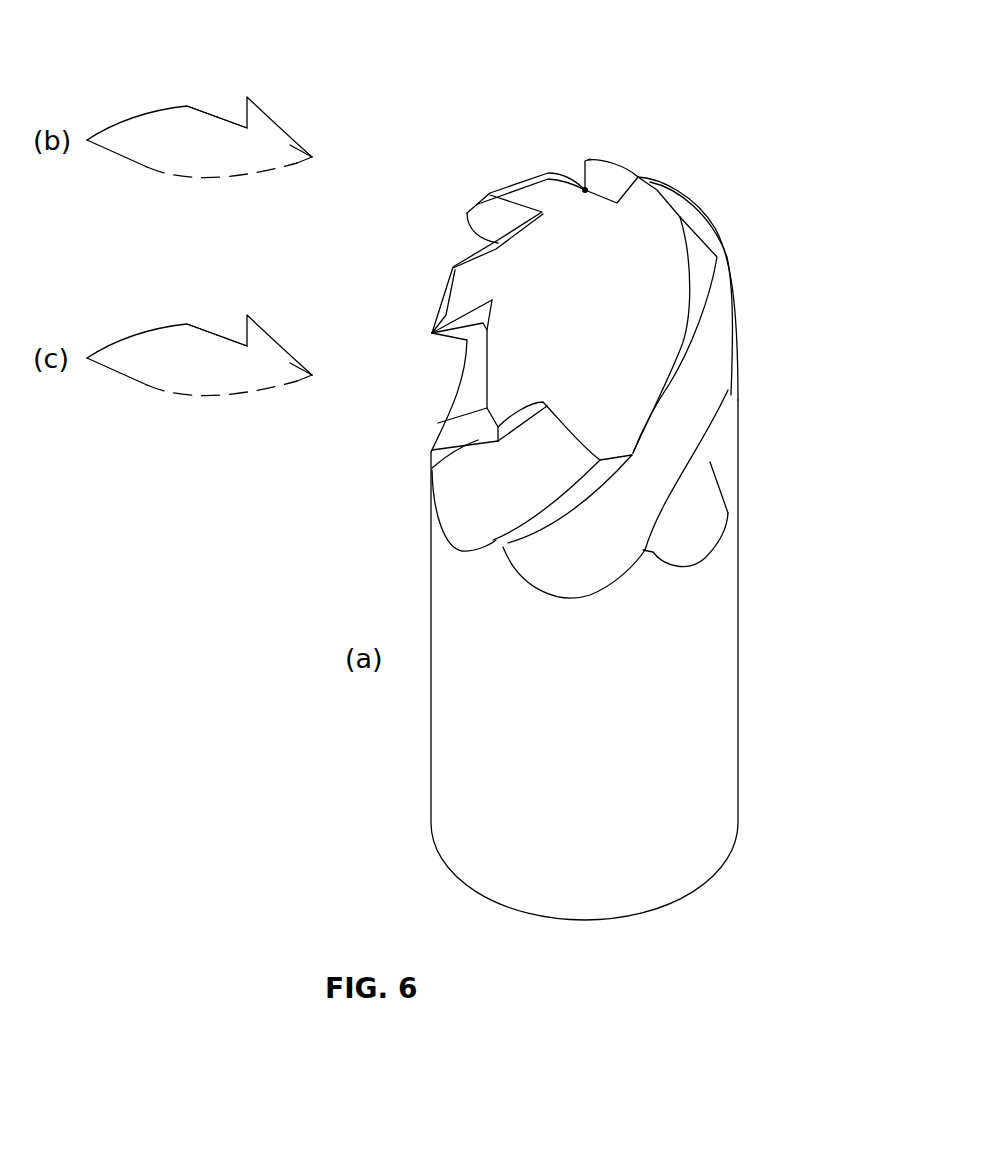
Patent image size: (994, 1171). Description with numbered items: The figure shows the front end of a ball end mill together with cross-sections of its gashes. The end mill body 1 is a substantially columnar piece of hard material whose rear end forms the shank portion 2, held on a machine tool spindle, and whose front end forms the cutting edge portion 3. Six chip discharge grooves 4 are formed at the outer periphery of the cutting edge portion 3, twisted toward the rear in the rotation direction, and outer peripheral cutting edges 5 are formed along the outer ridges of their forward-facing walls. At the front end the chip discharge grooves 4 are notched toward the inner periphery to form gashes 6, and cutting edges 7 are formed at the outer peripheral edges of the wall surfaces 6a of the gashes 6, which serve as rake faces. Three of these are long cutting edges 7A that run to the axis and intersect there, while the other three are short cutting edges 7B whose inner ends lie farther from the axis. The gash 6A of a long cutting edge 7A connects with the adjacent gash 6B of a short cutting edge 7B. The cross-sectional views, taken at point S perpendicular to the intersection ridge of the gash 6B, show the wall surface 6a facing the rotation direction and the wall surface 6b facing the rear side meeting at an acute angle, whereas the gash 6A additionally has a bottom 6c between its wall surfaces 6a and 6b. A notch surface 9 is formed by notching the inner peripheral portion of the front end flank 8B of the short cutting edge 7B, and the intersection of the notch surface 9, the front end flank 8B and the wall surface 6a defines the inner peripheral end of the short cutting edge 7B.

The end mill body 1 is at (818, 420).
The shank portion 2 is at (767, 530).
The cutting edge portion 3 is at (760, 404).
The chip discharge groove 4 is at (540, 568).
The outer peripheral cutting edge 5 is at (560, 507).
The gash 6 is at (417, 203).
The gash of the long cutting edge 6A is at (460, 238).
The gash of the short cutting edge 6B is at (541, 162).
The wall surface facing the end mill rotation direction 6a is at (243, 110).
The wall surface facing the rear side in the end mill rotation direction 6b is at (203, 110).
The bottom 6c is at (300, 147).
The cutting edge 7 is at (601, 224).
The long cutting edge 7A is at (488, 192).
The short cutting edge 7B is at (586, 175).
The front end flank of the short cutting edge 8B is at (590, 158).
The notch surface 9 is at (582, 183).
The point S is at (584, 187).